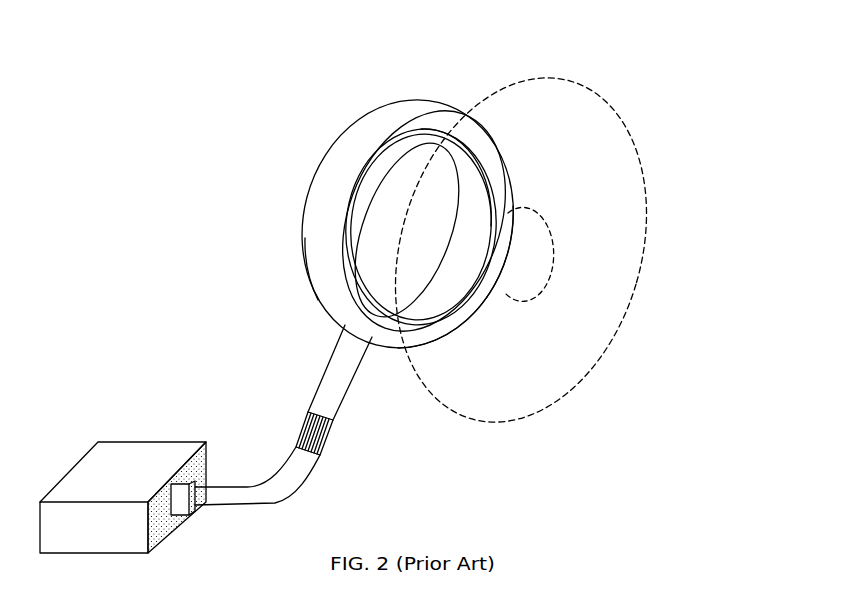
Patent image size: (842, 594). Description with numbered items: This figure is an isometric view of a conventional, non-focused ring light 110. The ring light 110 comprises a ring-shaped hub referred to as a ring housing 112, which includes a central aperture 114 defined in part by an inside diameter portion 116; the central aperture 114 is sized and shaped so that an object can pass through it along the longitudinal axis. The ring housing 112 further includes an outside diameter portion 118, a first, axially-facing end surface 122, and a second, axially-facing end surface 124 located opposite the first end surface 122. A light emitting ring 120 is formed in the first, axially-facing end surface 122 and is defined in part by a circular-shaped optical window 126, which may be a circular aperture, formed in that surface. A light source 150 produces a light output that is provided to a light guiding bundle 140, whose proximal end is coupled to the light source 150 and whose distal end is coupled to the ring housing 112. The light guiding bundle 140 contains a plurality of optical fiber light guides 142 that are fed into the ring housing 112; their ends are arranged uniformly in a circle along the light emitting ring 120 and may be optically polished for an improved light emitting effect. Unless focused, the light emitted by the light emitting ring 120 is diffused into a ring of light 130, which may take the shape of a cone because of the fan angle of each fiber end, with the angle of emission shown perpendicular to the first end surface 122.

The ring light 110 is at (418, 269).
The ring housing 112 is at (365, 135).
The central aperture 114 is at (437, 250).
The inside diameter portion 116 is at (467, 168).
The outside diameter portion 118 is at (395, 110).
The light emitting ring 120 is at (353, 205).
The first, axially-facing end surface 122 is at (437, 340).
The second, axially-facing end surface 124 is at (306, 254).
The optical window 126 is at (470, 300).
The ring of light 130 is at (618, 197).
The light guiding bundle 140 is at (327, 380).
The optical fiber light guides 142 is at (324, 446).
The light source 150 is at (130, 470).